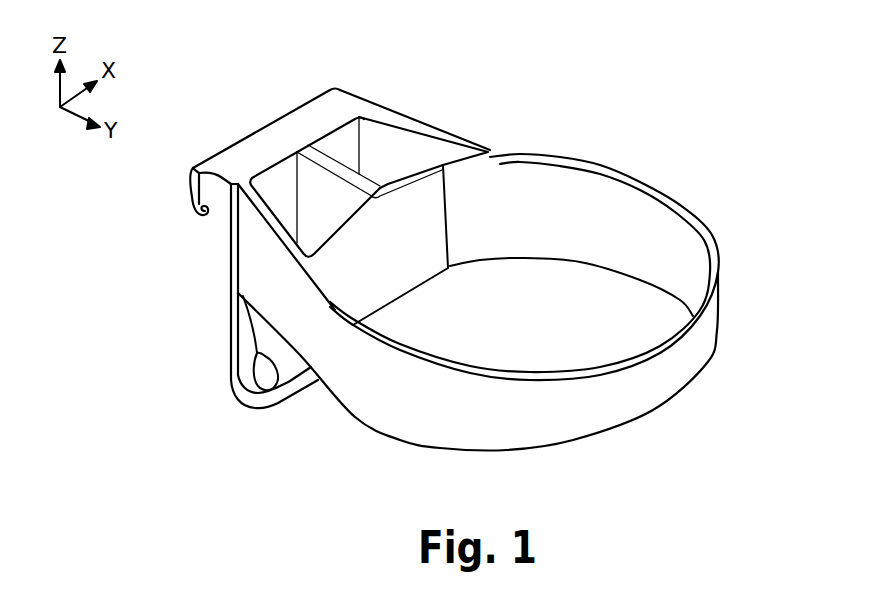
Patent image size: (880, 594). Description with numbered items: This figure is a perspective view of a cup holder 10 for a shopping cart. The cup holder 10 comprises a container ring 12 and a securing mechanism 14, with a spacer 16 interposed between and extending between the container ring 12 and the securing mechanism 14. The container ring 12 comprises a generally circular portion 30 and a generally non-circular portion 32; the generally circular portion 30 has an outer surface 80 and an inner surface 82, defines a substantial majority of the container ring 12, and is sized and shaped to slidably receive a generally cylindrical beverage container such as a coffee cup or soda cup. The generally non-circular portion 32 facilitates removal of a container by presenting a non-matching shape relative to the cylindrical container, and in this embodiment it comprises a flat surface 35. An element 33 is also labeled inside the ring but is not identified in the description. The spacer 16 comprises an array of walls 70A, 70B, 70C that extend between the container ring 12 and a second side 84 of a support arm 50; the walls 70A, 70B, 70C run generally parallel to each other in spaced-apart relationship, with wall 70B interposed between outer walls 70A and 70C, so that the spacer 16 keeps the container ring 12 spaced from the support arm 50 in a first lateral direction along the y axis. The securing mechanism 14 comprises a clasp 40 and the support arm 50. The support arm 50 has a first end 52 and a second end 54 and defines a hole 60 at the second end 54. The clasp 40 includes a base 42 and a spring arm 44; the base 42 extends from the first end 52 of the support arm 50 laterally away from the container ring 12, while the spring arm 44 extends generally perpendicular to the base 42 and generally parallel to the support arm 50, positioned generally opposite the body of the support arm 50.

The cup holder 10 is at (651, 153).
The container ring 12 is at (700, 219).
The securing mechanism 14 is at (213, 148).
The spacer 16 is at (435, 120).
The generally circular portion 30 is at (537, 438).
The generally non-circular portion 32 is at (409, 292).
The floor surface 33 is at (559, 243).
The flat surface 35 is at (386, 309).
The clasp 40 is at (193, 171).
The base 42 is at (283, 132).
The spring arm 44 is at (197, 183).
The support arm 50 is at (229, 375).
The first end 52 is at (227, 214).
The second end 54 is at (253, 409).
The hole 60 is at (268, 376).
The wall 70A is at (270, 284).
The wall 70B is at (351, 170).
The wall 70C is at (472, 133).
The outer surface 80 is at (507, 435).
The inner surface 82 is at (620, 246).
The second side 84 is at (250, 321).